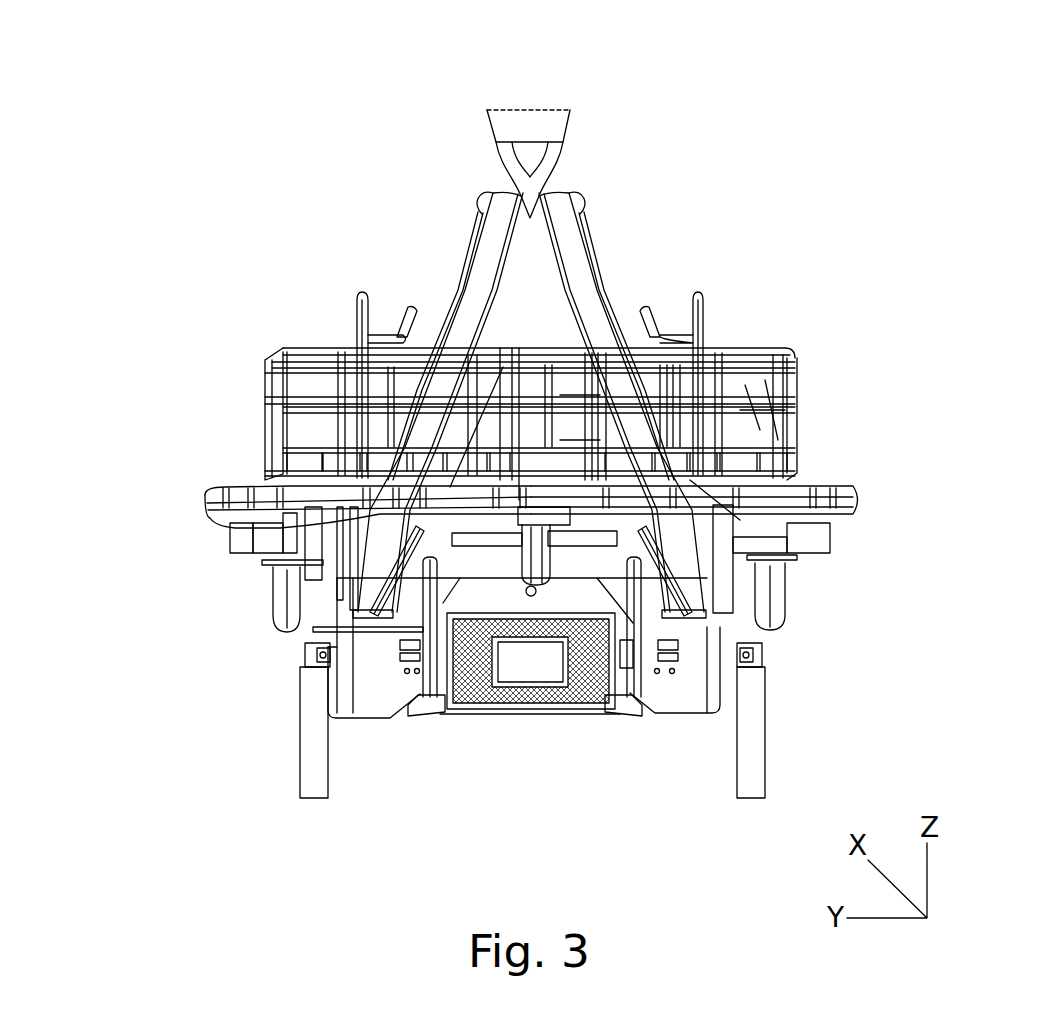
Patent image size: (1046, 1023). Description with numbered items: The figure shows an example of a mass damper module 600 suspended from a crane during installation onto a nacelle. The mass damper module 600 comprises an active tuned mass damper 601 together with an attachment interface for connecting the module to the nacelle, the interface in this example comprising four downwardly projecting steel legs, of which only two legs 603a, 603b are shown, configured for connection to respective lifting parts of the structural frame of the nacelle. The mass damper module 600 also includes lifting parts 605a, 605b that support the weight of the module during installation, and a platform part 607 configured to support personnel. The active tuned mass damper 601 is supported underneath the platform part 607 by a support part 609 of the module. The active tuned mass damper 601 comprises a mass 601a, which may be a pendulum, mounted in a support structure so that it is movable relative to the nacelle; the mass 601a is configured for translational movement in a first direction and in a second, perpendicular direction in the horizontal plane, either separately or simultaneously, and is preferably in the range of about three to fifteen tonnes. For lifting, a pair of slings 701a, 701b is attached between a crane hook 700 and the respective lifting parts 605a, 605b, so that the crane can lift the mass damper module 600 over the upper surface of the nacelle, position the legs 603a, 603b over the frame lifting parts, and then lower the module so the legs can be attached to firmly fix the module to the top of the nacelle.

The mass damper module 600 is at (420, 105).
The crane hook 700 is at (538, 120).
The sling 701a is at (473, 258).
The sling 701b is at (584, 264).
The platform part 607 is at (822, 356).
The lifting part 605a is at (372, 556).
The lifting part 605b is at (700, 553).
The active tuned mass damper 601 is at (567, 707).
The mass 601a is at (512, 667).
The support part 609 is at (372, 697).
The leg 603a is at (310, 789).
The leg 603b is at (750, 788).